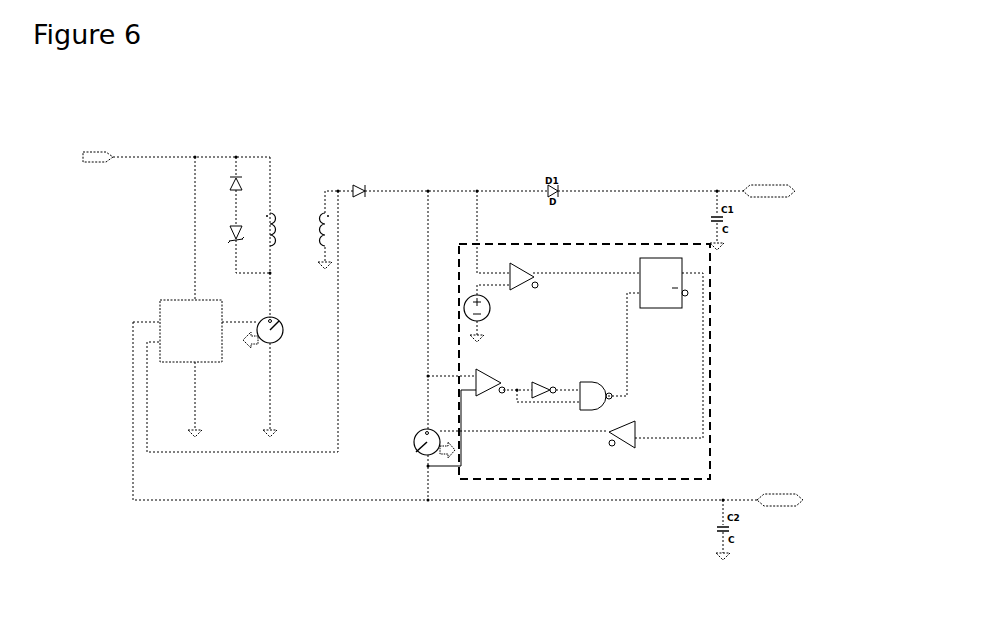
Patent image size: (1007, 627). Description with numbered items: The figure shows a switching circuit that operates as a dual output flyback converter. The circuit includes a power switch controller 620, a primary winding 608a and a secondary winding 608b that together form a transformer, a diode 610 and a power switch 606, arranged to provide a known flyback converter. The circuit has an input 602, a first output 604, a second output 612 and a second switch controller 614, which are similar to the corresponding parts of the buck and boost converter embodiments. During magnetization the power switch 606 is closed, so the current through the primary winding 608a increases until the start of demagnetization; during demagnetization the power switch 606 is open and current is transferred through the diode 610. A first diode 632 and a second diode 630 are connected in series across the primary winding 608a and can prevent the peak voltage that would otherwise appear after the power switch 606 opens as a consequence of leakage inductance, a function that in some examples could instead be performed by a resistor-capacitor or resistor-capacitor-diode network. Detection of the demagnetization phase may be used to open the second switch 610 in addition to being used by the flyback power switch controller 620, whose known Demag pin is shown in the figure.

The input 602 is at (97, 151).
The first output 604 is at (772, 184).
The power switch 606 is at (262, 337).
The primary winding 608a is at (271, 215).
The secondary winding 608b is at (327, 222).
The diode D11 610 is at (368, 190).
The second output 612 is at (780, 507).
The second switch controller 614 is at (713, 343).
The power switch controller 620 is at (177, 296).
The diode D10 630 is at (240, 178).
The diode D9 632 is at (232, 224).